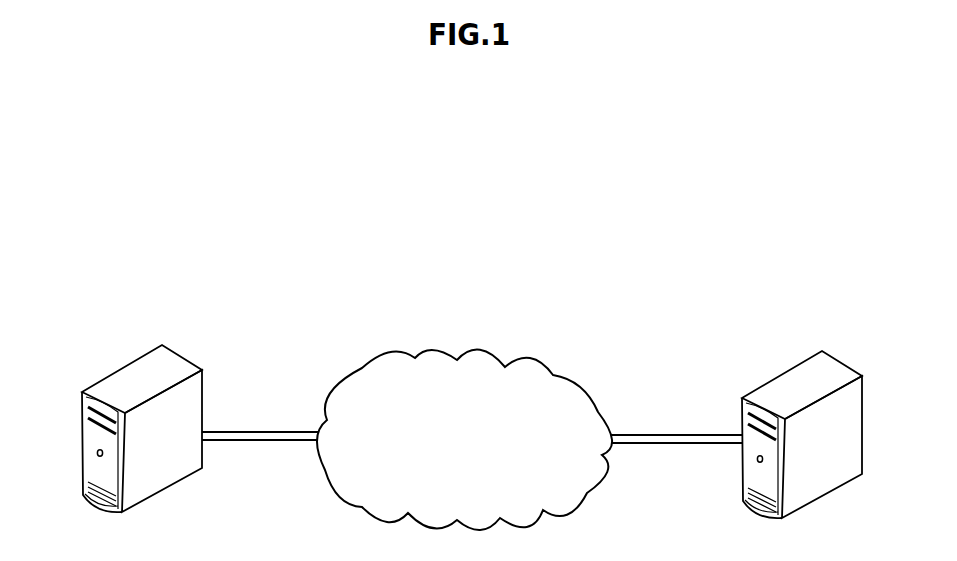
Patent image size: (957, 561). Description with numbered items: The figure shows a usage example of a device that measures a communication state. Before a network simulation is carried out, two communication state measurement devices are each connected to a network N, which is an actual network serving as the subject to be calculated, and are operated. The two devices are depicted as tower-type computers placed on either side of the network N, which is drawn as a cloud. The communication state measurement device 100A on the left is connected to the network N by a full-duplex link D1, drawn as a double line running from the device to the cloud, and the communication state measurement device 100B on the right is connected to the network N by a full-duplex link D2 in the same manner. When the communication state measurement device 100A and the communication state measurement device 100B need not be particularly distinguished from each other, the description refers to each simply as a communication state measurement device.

The communication state measurement device 100A is at (175, 346).
The communication state measurement device 100B is at (835, 353).
The full-duplex link D1 is at (256, 431).
The full-duplex link D2 is at (675, 434).
The network N is at (492, 352).